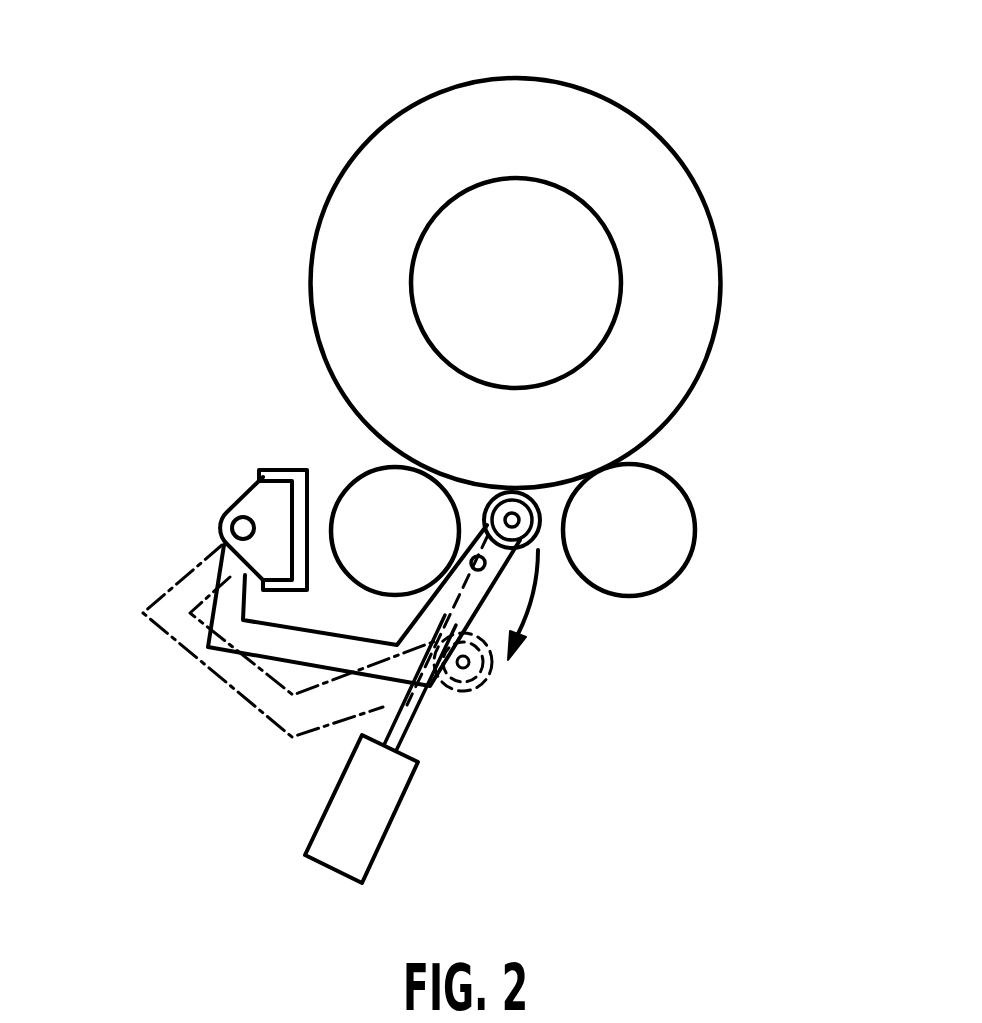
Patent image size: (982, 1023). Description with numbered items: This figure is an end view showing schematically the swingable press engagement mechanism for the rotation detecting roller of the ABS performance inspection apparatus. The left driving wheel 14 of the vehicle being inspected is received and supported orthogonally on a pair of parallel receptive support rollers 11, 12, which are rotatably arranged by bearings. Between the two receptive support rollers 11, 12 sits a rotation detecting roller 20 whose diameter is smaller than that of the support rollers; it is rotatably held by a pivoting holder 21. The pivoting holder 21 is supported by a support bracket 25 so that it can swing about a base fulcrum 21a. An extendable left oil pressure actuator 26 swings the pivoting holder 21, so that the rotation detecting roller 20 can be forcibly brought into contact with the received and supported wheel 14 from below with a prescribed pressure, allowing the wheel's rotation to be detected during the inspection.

The left driving wheel 14 is at (595, 115).
The receptive support roller 11 is at (388, 487).
The receptive support roller 12 is at (665, 502).
The support bracket 25 is at (275, 467).
The base fulcrum 21a is at (232, 513).
The pivoting holder 21 is at (250, 675).
The rotation detecting roller 20 is at (538, 533).
The left oil pressure actuator 26 is at (375, 812).